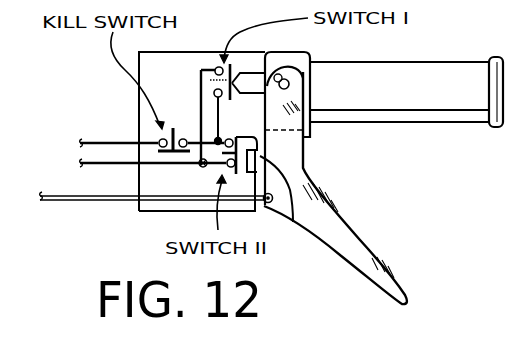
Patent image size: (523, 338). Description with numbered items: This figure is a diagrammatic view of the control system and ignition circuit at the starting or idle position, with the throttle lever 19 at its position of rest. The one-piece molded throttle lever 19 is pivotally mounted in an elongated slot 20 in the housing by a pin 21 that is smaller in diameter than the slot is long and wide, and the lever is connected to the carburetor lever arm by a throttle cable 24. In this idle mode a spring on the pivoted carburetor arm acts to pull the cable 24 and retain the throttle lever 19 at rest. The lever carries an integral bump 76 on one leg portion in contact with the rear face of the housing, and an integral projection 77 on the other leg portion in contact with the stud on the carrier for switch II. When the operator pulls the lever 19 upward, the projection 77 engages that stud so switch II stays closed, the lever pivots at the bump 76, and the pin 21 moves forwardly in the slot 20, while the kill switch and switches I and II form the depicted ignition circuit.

The throttle lever 19 is at (372, 249).
The elongated slot 20 is at (282, 74).
The pin 21 is at (289, 84).
The throttle cable 24 is at (88, 202).
The bump 76 is at (293, 222).
The projection 77 is at (303, 142).